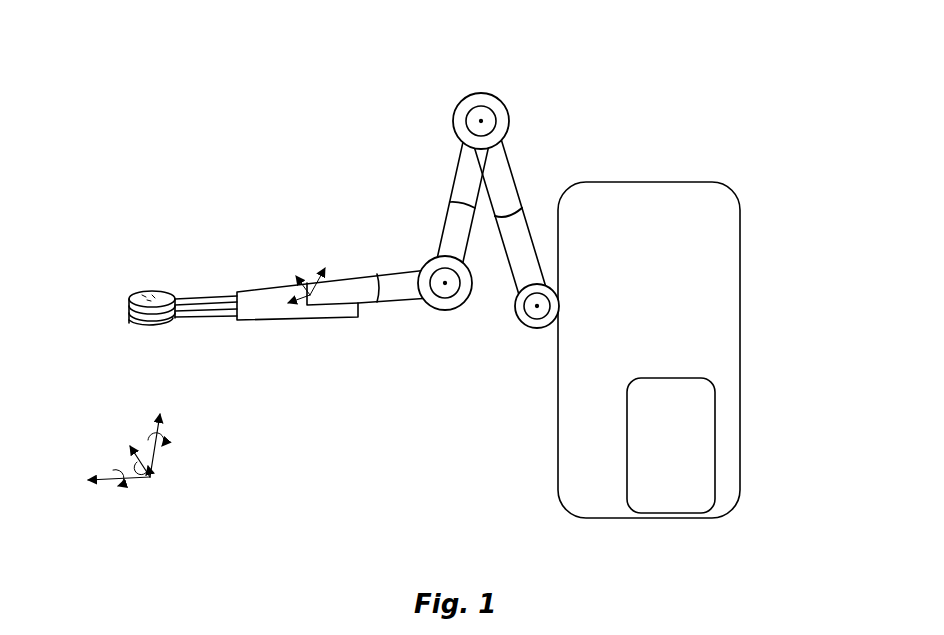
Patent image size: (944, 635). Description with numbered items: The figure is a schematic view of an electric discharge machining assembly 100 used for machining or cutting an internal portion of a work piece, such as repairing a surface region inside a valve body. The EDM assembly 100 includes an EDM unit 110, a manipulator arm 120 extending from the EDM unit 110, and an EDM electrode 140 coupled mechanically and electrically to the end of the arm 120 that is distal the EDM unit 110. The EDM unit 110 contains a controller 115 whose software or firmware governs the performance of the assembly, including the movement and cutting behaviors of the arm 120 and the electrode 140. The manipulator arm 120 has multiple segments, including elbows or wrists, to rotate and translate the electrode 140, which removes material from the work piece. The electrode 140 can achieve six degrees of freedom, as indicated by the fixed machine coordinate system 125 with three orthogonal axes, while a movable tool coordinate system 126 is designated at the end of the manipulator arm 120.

The EDM assembly 100 is at (186, 101).
The EDM unit 110 is at (725, 184).
The controller 115 is at (708, 380).
The manipulator arm 120 is at (510, 120).
The machine coordinate system 125 is at (148, 482).
The tool coordinate system 126 is at (311, 300).
The EDM electrode 140 is at (258, 288).